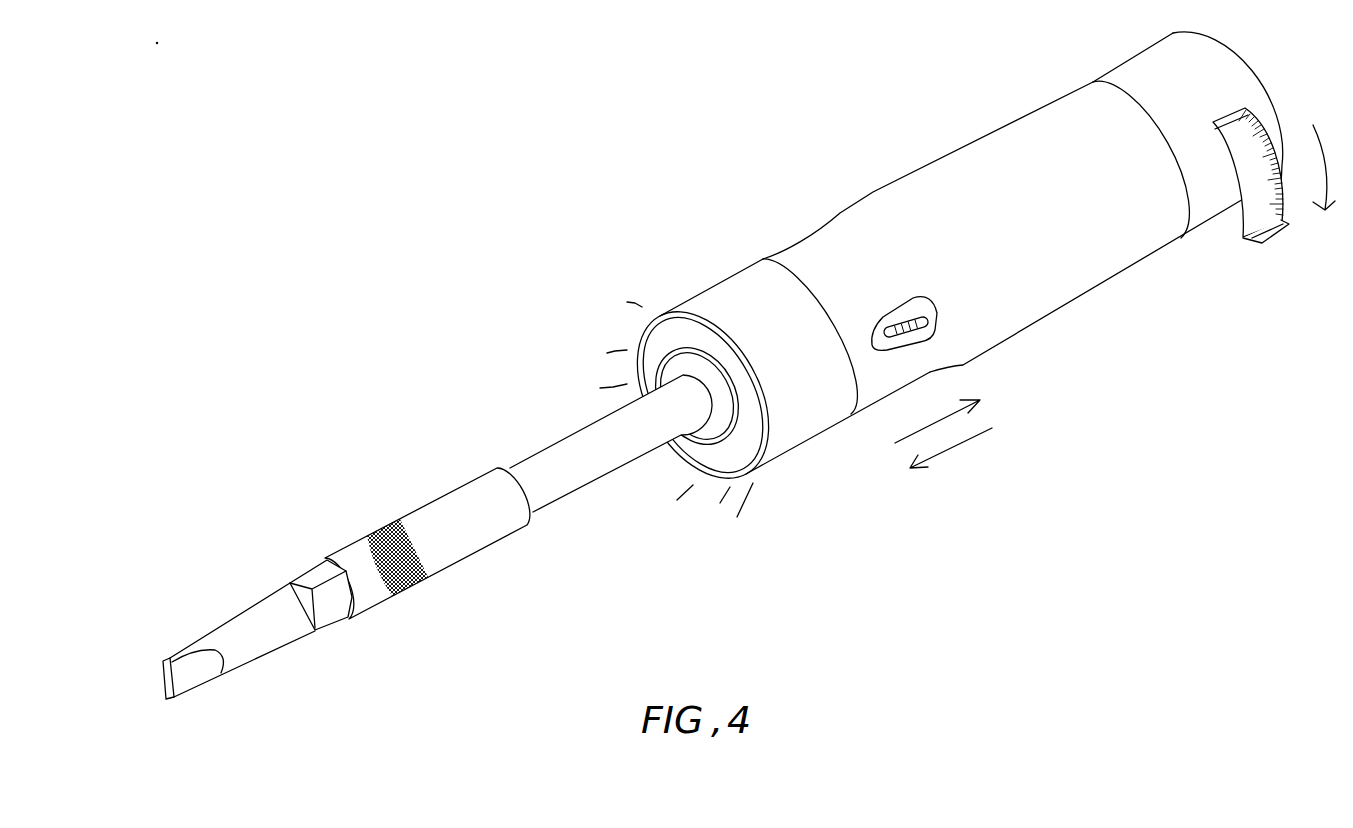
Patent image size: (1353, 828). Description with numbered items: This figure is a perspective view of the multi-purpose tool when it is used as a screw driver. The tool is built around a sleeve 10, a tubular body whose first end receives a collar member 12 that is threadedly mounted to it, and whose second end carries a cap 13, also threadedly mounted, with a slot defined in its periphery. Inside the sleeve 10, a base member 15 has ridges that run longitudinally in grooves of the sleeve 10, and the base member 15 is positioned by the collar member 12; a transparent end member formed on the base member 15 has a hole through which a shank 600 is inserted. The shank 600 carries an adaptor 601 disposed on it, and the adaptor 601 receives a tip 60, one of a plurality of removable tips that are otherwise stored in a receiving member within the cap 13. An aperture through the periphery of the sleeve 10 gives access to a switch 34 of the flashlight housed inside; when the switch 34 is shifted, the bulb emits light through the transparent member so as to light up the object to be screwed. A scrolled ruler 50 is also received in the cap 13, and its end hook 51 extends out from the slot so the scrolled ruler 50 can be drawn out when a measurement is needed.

The sleeve 10 is at (1093, 277).
The collar member 12 is at (800, 437).
The cap 13 is at (1225, 75).
The base member 15 is at (717, 457).
The switch 34 is at (898, 350).
The scrolled ruler 50 is at (1243, 193).
The end hook 51 is at (1273, 240).
The tip 60 is at (270, 633).
The shank 600 is at (461, 456).
The adaptor 601 is at (370, 560).